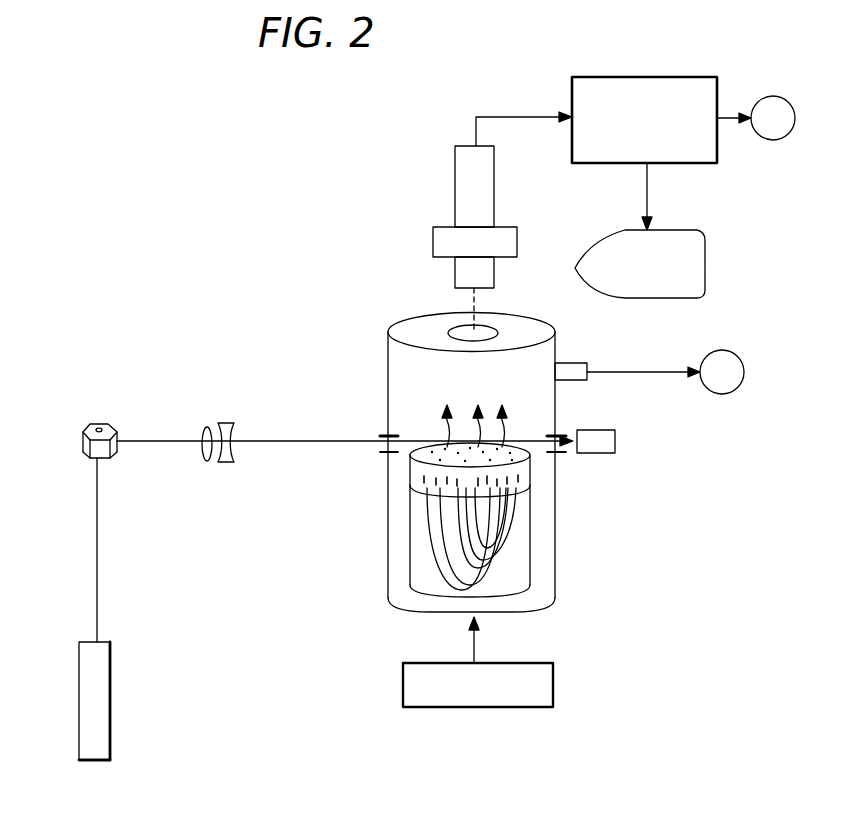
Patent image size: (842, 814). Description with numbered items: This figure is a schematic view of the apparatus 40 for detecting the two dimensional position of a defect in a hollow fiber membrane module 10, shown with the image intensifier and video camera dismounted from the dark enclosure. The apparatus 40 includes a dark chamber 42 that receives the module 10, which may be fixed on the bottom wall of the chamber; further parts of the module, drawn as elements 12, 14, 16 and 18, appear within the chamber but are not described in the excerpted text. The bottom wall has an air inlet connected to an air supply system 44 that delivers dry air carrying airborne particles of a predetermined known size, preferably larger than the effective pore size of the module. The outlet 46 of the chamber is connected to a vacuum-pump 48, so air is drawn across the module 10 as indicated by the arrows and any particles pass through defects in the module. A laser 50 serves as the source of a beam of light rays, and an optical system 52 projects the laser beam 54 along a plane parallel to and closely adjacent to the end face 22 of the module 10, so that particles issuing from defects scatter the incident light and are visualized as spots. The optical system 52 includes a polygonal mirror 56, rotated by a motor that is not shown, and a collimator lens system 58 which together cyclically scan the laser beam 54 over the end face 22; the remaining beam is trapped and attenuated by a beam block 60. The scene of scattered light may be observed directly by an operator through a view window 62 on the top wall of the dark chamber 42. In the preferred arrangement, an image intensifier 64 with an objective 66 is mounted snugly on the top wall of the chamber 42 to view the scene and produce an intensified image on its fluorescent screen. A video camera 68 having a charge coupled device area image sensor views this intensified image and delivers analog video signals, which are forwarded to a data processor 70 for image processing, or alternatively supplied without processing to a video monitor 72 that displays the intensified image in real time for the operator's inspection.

The hollow fiber membrane module 10 is at (538, 579).
The fiber 12 is at (505, 548).
The fibers 14 is at (458, 537).
The container 16 is at (530, 500).
The cap 18 is at (410, 470).
The end face 22 is at (527, 453).
The apparatus 40 is at (137, 263).
The dark chamber 42 is at (388, 362).
The air supply system 44 is at (403, 681).
The outlet 46 is at (575, 363).
The vacuum-pump 48 is at (745, 370).
The laser 50 is at (82, 685).
The optical system 52 is at (225, 397).
The laser beam 54 is at (320, 440).
The polygonal mirror 56 is at (82, 445).
The collimator lens system 58 is at (212, 472).
The beam block 60 is at (598, 430).
The view window 62 is at (447, 330).
The image intensifier 64 is at (508, 238).
The objective 66 is at (490, 272).
The video camera 68 is at (485, 188).
The data processor 70 is at (693, 163).
The video monitor 72 is at (705, 268).